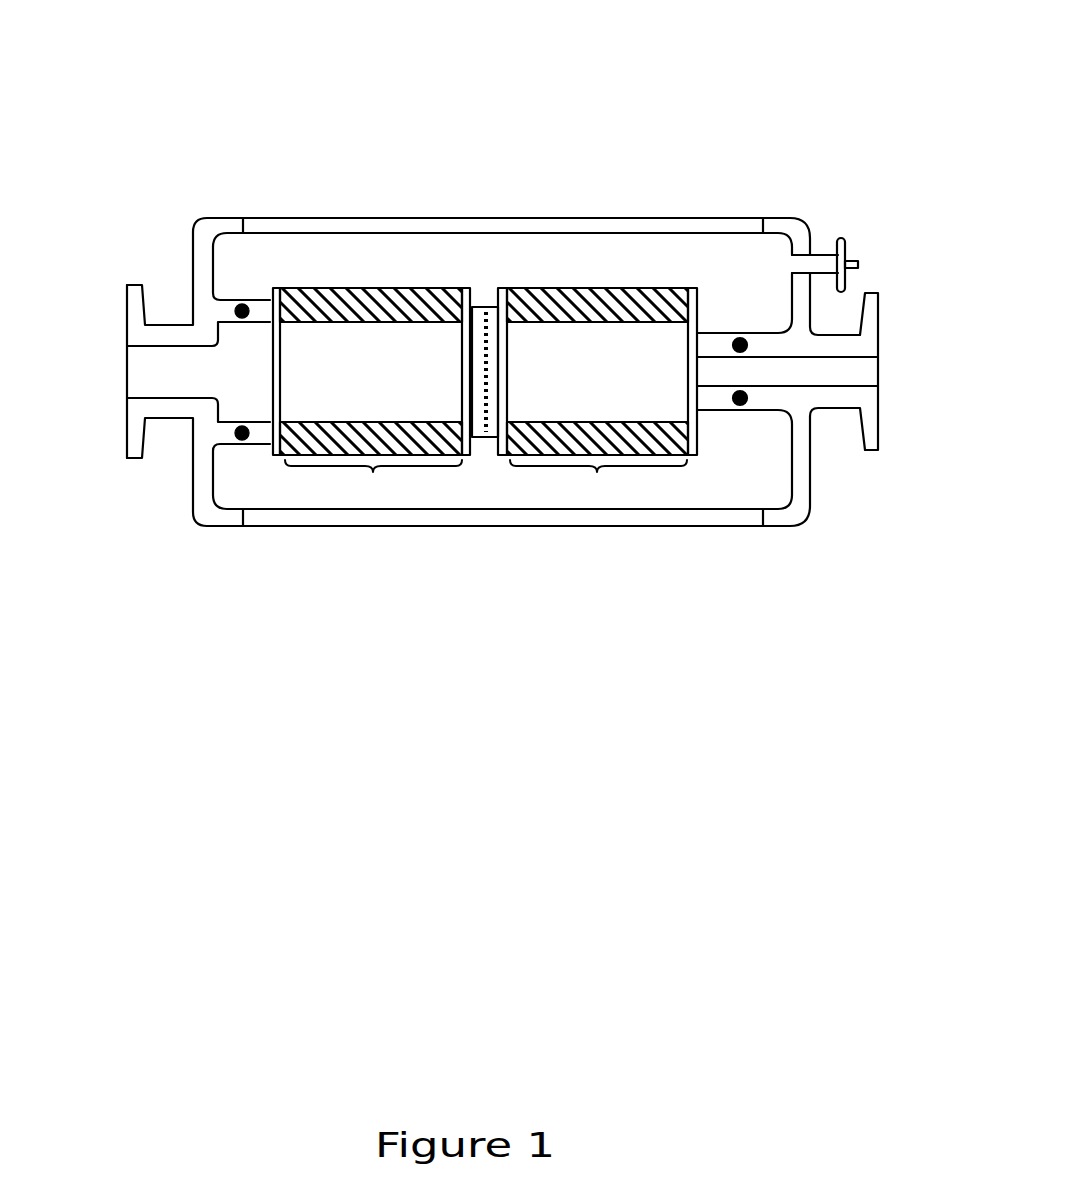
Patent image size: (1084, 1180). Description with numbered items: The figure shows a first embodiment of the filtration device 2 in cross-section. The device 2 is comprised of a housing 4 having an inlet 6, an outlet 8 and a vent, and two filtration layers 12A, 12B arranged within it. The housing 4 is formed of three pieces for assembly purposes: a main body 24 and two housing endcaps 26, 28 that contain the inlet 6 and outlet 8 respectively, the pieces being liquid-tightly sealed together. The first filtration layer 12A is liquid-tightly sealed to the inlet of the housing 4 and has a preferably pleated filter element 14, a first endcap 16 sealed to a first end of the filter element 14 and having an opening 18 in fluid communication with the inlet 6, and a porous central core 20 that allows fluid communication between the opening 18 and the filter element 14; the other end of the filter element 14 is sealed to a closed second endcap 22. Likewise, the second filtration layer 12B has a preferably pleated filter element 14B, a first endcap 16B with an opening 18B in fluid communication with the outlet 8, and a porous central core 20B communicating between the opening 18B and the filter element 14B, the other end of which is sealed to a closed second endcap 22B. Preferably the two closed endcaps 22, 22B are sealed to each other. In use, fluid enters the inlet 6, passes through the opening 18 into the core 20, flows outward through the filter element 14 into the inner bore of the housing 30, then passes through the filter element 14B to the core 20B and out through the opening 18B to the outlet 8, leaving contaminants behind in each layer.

The device 2 is at (542, 165).
The housing 4 is at (705, 217).
The inlet 6 is at (817, 368).
The outlet 8 is at (190, 373).
The first filtration layer 12A is at (652, 343).
The second filtration layer 12B is at (374, 335).
The filter element 14 is at (630, 300).
The filter element 14B is at (392, 295).
The first endcap 16 is at (718, 333).
The first endcap 16B is at (262, 440).
The opening 18 is at (700, 370).
The opening 18B is at (270, 375).
The central core 20 is at (642, 373).
The central core 20B is at (347, 380).
The closed second endcap 22 is at (497, 457).
The closed second endcap 22B is at (467, 288).
The main body 24 is at (738, 221).
The housing endcap 26 is at (812, 233).
The housing endcap 28 is at (213, 230).
The inner bore of the housing 30 is at (553, 262).